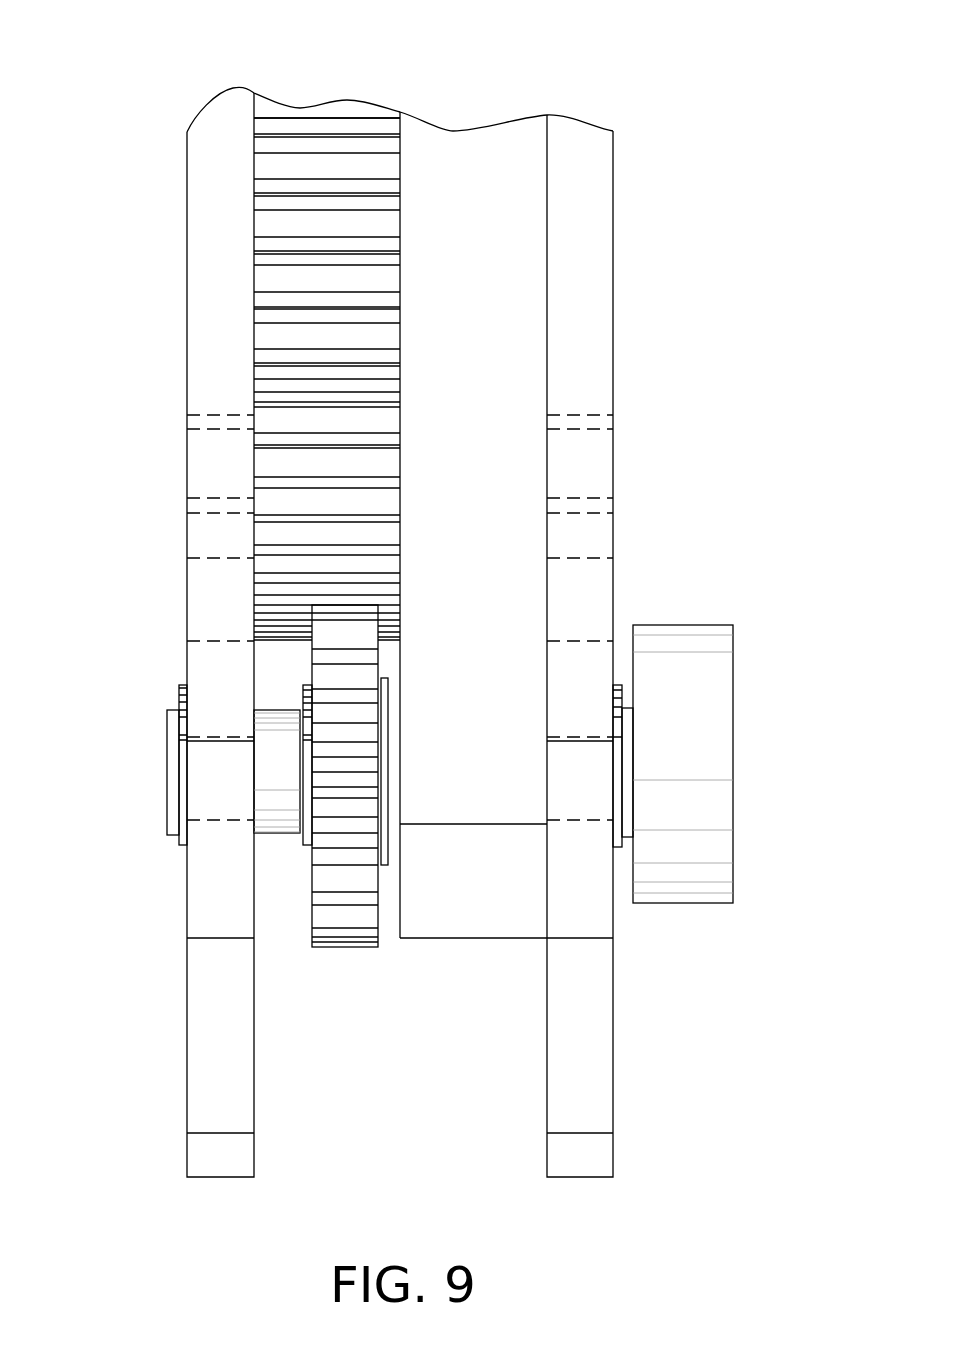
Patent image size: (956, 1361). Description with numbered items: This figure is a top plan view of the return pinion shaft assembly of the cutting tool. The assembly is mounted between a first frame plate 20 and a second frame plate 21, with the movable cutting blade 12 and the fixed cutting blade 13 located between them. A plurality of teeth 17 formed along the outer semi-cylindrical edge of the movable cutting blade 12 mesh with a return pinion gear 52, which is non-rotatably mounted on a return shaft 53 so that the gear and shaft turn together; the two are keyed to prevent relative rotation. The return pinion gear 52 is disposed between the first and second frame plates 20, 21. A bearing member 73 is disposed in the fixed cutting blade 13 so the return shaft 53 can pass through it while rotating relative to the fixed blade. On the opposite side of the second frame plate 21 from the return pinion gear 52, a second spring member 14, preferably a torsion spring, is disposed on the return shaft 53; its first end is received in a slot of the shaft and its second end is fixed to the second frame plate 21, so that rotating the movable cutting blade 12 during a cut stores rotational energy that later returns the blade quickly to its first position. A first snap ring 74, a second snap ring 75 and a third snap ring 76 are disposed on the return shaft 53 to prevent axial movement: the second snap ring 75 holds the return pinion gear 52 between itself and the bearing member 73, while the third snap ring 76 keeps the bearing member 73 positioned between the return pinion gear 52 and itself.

The movable cutting blade 12 is at (357, 128).
The fixed cutting blade 13 is at (462, 172).
The second spring member 14 is at (697, 903).
The teeth 17 is at (313, 118).
The first frame plate 20 is at (187, 1085).
The second frame plate 21 is at (613, 1088).
The return pinion gear 52 is at (371, 948).
The return shaft 53 is at (276, 836).
The bearing member 73 is at (390, 867).
The first snap ring 74 is at (183, 845).
The second snap ring 75 is at (305, 847).
The third snap ring 76 is at (620, 684).